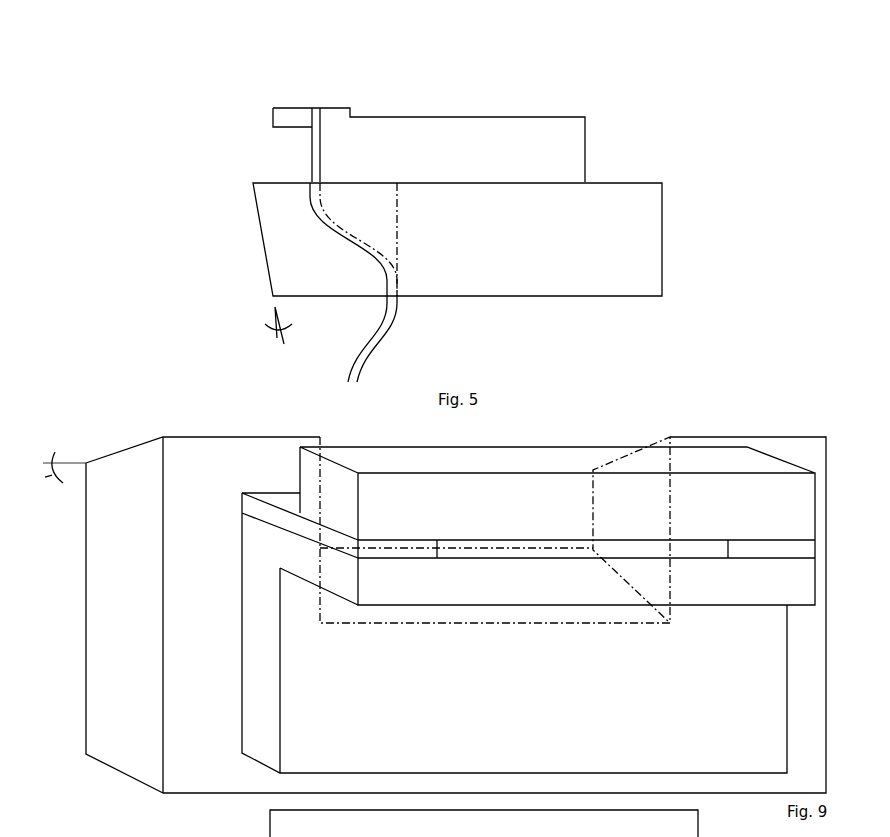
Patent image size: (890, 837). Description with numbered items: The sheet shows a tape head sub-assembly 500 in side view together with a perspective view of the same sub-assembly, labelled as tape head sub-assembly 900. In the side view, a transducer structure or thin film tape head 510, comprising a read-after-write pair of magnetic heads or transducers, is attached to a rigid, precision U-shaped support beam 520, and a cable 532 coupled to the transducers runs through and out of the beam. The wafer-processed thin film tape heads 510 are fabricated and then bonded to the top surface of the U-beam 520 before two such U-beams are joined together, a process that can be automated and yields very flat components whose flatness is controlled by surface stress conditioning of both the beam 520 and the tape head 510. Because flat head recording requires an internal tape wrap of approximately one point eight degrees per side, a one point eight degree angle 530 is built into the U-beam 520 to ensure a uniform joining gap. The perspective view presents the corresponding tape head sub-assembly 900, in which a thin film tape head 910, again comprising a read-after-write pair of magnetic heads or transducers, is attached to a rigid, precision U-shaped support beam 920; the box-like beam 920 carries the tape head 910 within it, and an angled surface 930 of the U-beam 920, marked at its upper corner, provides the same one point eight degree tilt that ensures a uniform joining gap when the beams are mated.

In FIG. 5, the tape head sub-assembly 500 is at (497, 62).
In FIG. 5, the thin film tape head 510 is at (303, 100).
In FIG. 5, the U-shaped support beam 520 is at (652, 238).
In FIG. 5, the 1.8 degree angle 530 is at (273, 363).
In FIG. 5, the cable 532 is at (410, 337).
In FIG. 9, the tape head sub-assembly 900 is at (753, 410).
In FIG. 9, the thin film tape head 910 is at (257, 547).
In FIG. 9, the U-shaped support beam 920 is at (178, 752).
In FIG. 9, the angled surface 930 is at (55, 443).